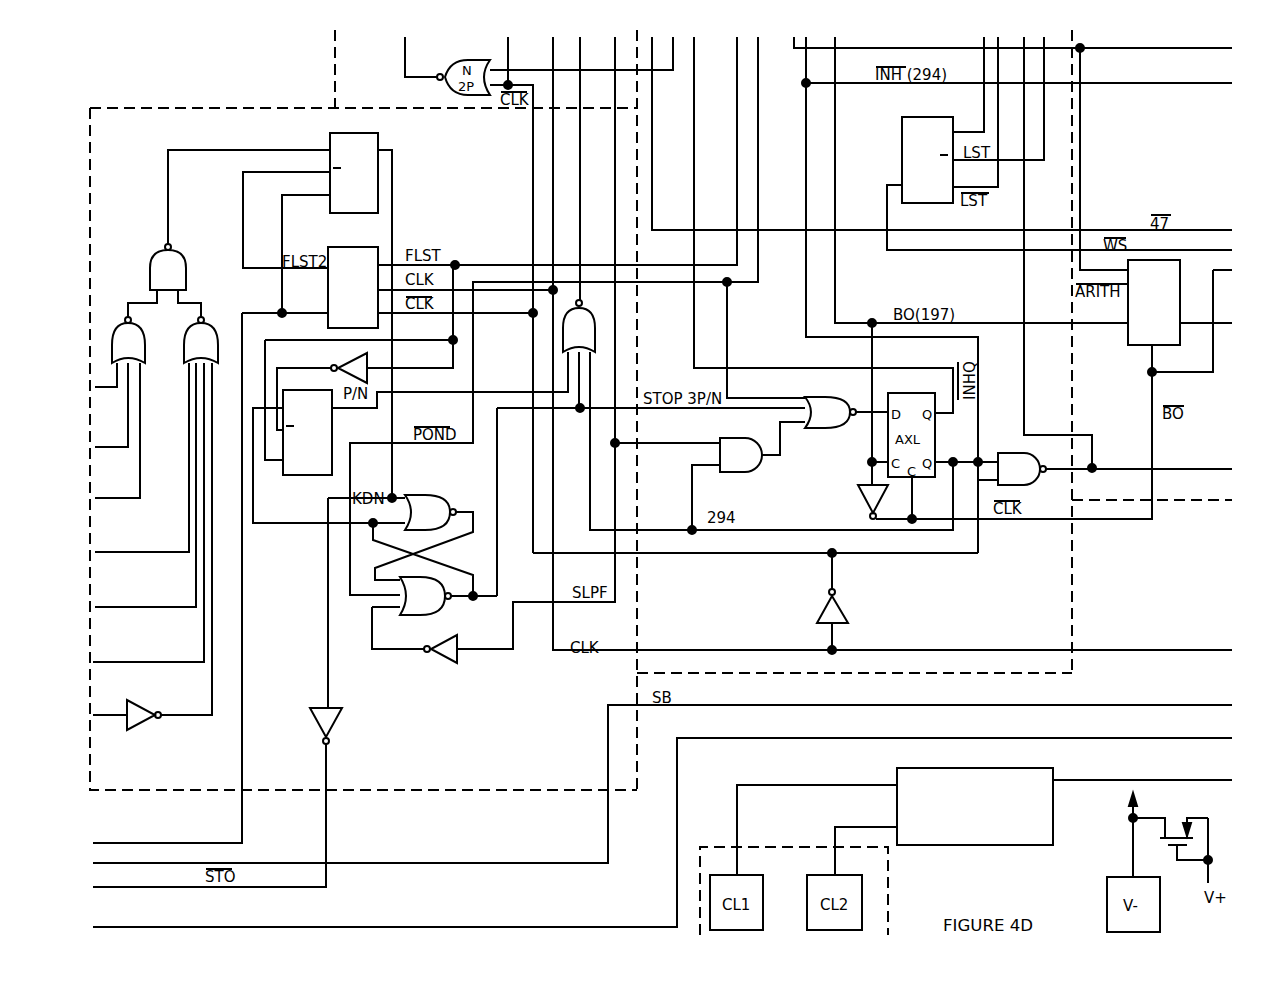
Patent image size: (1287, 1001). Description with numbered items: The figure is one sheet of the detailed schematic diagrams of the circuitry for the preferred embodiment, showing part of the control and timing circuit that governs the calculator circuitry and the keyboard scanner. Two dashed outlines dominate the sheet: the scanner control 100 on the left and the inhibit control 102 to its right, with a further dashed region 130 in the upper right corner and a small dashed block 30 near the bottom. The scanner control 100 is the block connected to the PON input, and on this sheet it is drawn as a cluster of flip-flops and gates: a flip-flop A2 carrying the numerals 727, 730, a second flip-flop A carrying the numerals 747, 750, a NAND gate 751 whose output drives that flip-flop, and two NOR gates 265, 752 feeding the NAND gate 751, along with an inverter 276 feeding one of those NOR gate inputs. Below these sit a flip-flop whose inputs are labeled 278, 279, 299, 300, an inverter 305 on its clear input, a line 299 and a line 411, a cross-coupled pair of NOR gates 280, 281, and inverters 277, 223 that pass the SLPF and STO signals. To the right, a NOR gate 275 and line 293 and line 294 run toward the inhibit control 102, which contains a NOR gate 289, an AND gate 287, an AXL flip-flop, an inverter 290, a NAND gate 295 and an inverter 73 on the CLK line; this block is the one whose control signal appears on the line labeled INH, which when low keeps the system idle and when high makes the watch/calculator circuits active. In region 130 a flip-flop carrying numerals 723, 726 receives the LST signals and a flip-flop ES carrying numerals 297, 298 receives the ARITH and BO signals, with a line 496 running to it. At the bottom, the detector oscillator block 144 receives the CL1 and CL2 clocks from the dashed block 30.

The scanner control 100 is at (478, 191).
The inhibit control 102 is at (1003, 599).
The block 130 region 130 is at (1160, 166).
The dashed block 30 (clocks) 30 is at (888, 893).
The line 496 is at (942, 134).
The line 293 is at (823, 225).
The line 294 is at (1010, 295).
The flip-flop 723 is at (1059, 173).
The flip-flop 726 is at (927, 160).
The flip-flop ES 297 is at (1054, 389).
The flip-flop ES 298 is at (1154, 302).
The NAND gate 295 is at (1108, 465).
The NOR gate 289 is at (839, 408).
The AND gate 287 is at (745, 447).
The inverter 290 is at (850, 506).
The inverter 73 is at (815, 601).
The NOR gate 275 is at (495, 222).
The flip-flop A2 727 is at (242, 478).
The flip-flop A2 730 is at (354, 173).
The flip-flop A 747 is at (353, 278).
The flip-flop A 750 is at (353, 287).
The NAND gate 751 is at (176, 255).
The NOR gate 265 is at (120, 391).
The NOR gate 752 is at (157, 500).
The inverter 276 is at (143, 710).
The inverter 223 is at (237, 692).
The flip-flop 278 is at (410, 431).
The flip-flop 279 is at (307, 432).
The flip-flop 300 is at (307, 432).
The inverter 305 is at (376, 324).
The line 299 is at (359, 365).
The line 411 is at (411, 433).
The NOR gate 280 is at (407, 544).
The NOR gate 281 is at (434, 597).
The inverter 277 is at (423, 645).
The detector oscillator 144 is at (988, 845).